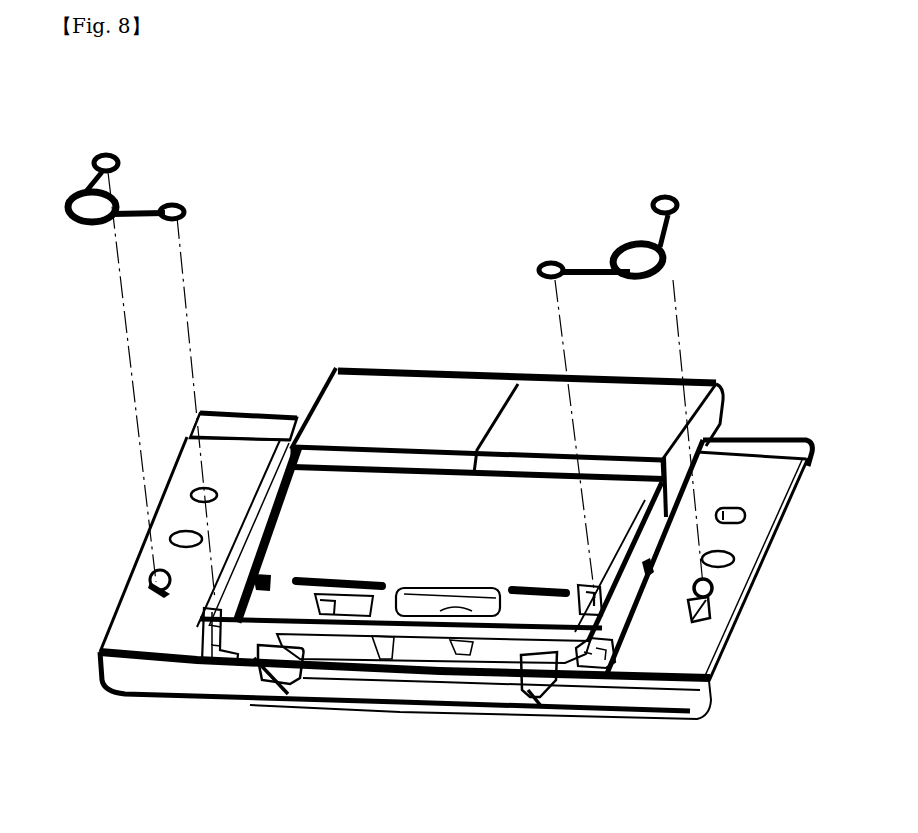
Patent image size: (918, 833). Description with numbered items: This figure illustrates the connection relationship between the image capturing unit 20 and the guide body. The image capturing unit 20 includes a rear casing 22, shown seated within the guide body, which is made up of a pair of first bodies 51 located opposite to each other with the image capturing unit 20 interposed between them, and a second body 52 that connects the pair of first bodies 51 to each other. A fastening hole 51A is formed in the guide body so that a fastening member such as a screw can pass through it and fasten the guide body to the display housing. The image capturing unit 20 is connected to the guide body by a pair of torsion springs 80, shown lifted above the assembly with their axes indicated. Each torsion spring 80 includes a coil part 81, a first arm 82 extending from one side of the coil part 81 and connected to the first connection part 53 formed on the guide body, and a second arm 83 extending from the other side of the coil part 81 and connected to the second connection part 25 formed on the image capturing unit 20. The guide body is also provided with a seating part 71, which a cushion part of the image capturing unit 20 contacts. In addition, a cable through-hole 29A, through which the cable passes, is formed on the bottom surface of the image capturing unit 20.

The image capturing unit 20 is at (354, 398).
The rear casing 22 is at (390, 490).
The second connection part 25 is at (211, 663).
The cable through-hole 29A is at (430, 648).
The first body 51 is at (172, 503).
The fastening hole 51A is at (738, 556).
The second body 52 is at (333, 684).
The first connection part 53 is at (148, 582).
The seating part 71 is at (278, 667).
The torsion spring 80 is at (152, 164).
The coil part 81 is at (662, 272).
The first arm 82 is at (680, 214).
The second arm 83 is at (585, 283).